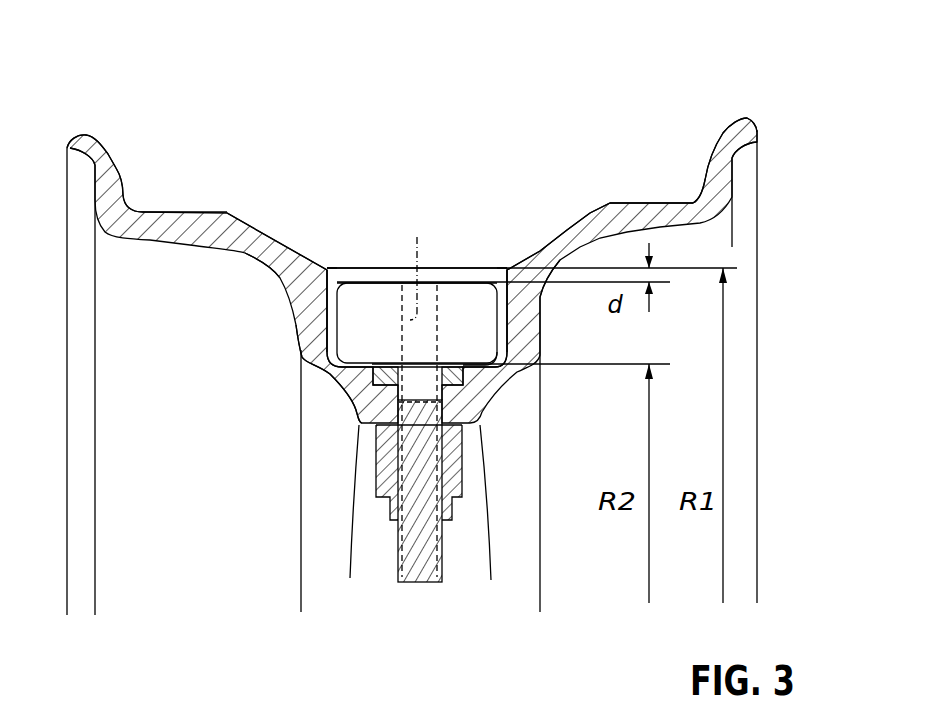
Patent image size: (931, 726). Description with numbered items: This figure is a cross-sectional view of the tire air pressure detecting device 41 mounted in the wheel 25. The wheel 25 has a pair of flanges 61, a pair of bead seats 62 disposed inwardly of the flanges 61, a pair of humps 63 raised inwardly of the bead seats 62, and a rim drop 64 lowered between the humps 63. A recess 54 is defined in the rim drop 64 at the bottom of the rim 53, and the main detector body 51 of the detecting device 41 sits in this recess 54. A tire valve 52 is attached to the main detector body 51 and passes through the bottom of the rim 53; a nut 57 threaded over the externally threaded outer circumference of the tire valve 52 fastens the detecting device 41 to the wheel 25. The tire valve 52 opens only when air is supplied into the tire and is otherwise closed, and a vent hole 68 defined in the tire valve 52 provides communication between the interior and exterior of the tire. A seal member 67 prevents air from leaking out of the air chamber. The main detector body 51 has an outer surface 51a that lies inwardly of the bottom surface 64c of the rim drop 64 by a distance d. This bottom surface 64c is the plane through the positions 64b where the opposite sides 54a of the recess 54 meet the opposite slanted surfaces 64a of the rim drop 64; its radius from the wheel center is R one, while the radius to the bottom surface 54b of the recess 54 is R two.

The wheel 25 is at (270, 104).
The tire air pressure detecting device 41 is at (453, 262).
The main detector body 51 is at (340, 272).
The outer surface 51a is at (387, 270).
The tire valve 52 is at (418, 582).
The rim 53 is at (737, 181).
The recess 54 is at (429, 339).
The opposite sides of the recess 54a is at (347, 268).
The bottom surface of the recess 54b is at (503, 388).
The nut 57 is at (388, 505).
The flanges 61 is at (108, 147).
The bead seats 62 is at (207, 203).
The humps 63 is at (225, 210).
The rim drop 64 is at (389, 330).
The slanted surfaces of the rim drop 64a is at (267, 237).
The intersection positions 64b is at (327, 270).
The bottom surface of the rim drop 64c is at (433, 270).
The seal member 67 is at (325, 375).
The vent hole 68 is at (417, 263).